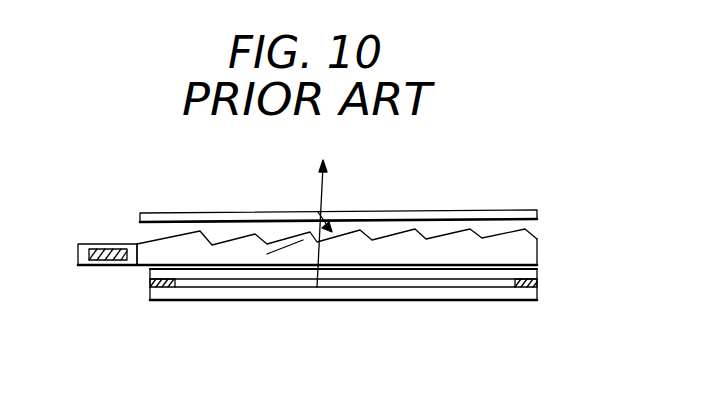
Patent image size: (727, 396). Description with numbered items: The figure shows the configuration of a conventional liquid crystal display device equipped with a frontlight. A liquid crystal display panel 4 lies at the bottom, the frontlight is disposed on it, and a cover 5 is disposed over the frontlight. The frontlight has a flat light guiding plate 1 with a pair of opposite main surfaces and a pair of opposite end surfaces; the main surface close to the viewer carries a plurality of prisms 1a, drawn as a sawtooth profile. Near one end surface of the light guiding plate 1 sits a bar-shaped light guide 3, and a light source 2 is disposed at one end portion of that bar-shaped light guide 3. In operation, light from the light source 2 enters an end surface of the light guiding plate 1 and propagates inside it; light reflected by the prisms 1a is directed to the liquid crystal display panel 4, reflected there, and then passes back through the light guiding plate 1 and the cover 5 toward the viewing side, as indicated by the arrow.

The light guiding plate 1 is at (329, 210).
The prisms 1a is at (227, 238).
The light source 2 is at (103, 250).
The bar-shaped light guide 3 is at (83, 262).
The liquid crystal display panel 4 is at (152, 298).
The cover 5 is at (505, 210).